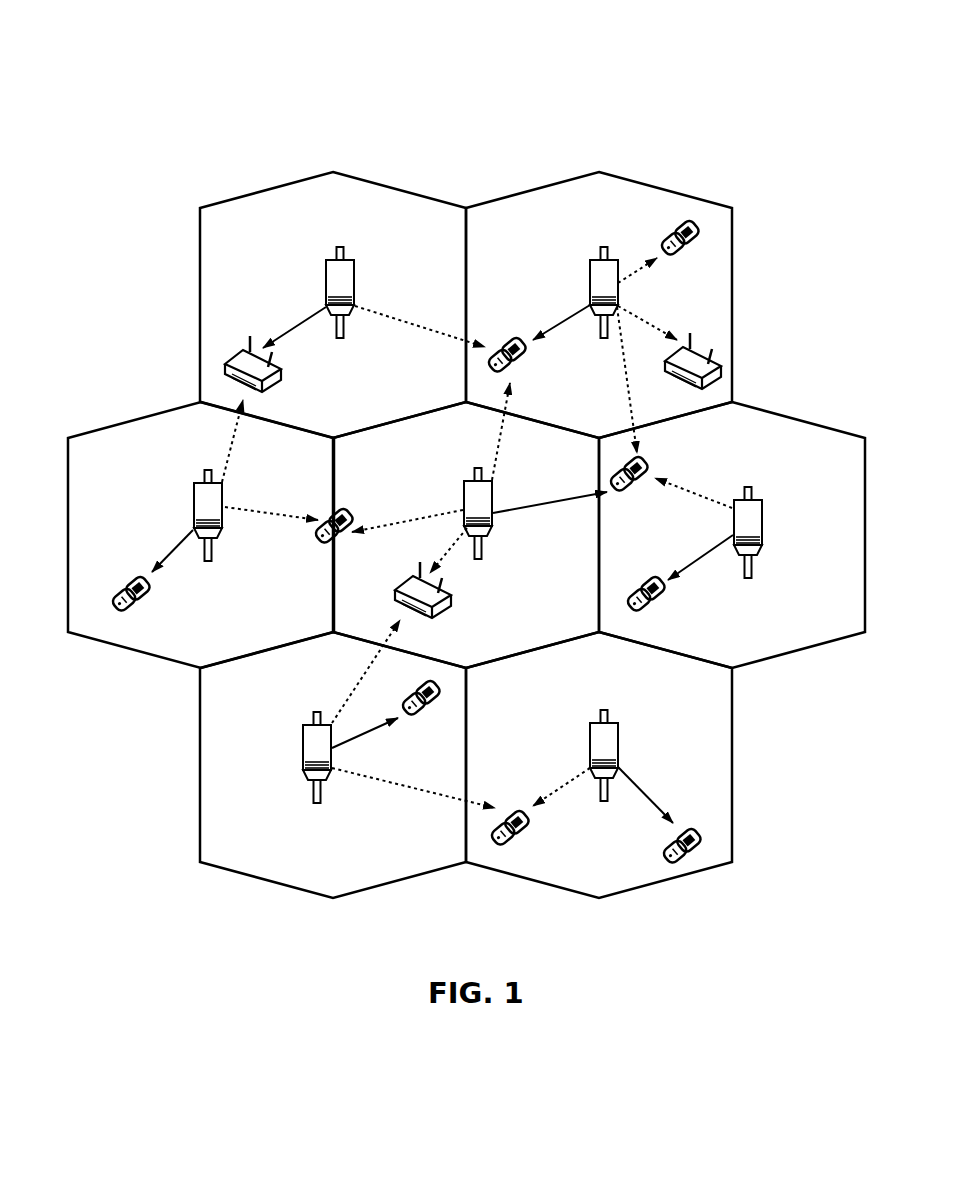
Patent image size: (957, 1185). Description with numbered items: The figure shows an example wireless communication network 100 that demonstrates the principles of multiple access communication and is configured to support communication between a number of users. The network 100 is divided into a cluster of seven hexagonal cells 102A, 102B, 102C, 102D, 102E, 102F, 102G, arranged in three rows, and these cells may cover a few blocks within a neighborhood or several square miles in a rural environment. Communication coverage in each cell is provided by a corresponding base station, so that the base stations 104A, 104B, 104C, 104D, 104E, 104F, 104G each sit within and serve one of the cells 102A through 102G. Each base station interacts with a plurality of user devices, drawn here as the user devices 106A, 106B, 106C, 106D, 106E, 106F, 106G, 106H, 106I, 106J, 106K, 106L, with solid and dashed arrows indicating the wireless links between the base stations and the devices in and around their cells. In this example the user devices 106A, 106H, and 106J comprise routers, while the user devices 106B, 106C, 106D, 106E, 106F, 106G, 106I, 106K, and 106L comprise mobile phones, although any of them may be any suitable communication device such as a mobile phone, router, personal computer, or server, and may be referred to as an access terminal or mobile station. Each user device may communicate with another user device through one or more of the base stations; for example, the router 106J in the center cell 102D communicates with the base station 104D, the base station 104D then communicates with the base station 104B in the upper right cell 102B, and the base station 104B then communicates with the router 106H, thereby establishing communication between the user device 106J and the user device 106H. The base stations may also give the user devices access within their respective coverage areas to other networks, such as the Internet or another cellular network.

The wireless communication network 100 is at (364, 66).
The cell 102A is at (280, 187).
The cell 102B is at (599, 172).
The cell 102C is at (140, 417).
The cell 102D is at (493, 444).
The cell 102E is at (807, 421).
The cell 102F is at (200, 752).
The cell 102G is at (732, 717).
The base station 104A is at (340, 247).
The base station 104B is at (604, 247).
The base station 104C is at (208, 470).
The base station 104D is at (473, 481).
The base station 104E is at (749, 487).
The base station 104F is at (317, 712).
The base station 104G is at (604, 710).
The user device 106A is at (272, 392).
The user device 106B is at (518, 368).
The user device 106C is at (139, 605).
The user device 106D is at (337, 512).
The user device 106E is at (622, 493).
The user device 106F is at (424, 717).
The user device 106G is at (518, 840).
The user device 106H is at (710, 345).
The user device 106I is at (676, 232).
The user device 106J is at (437, 618).
The user device 106K is at (652, 605).
The user device 106L is at (687, 826).